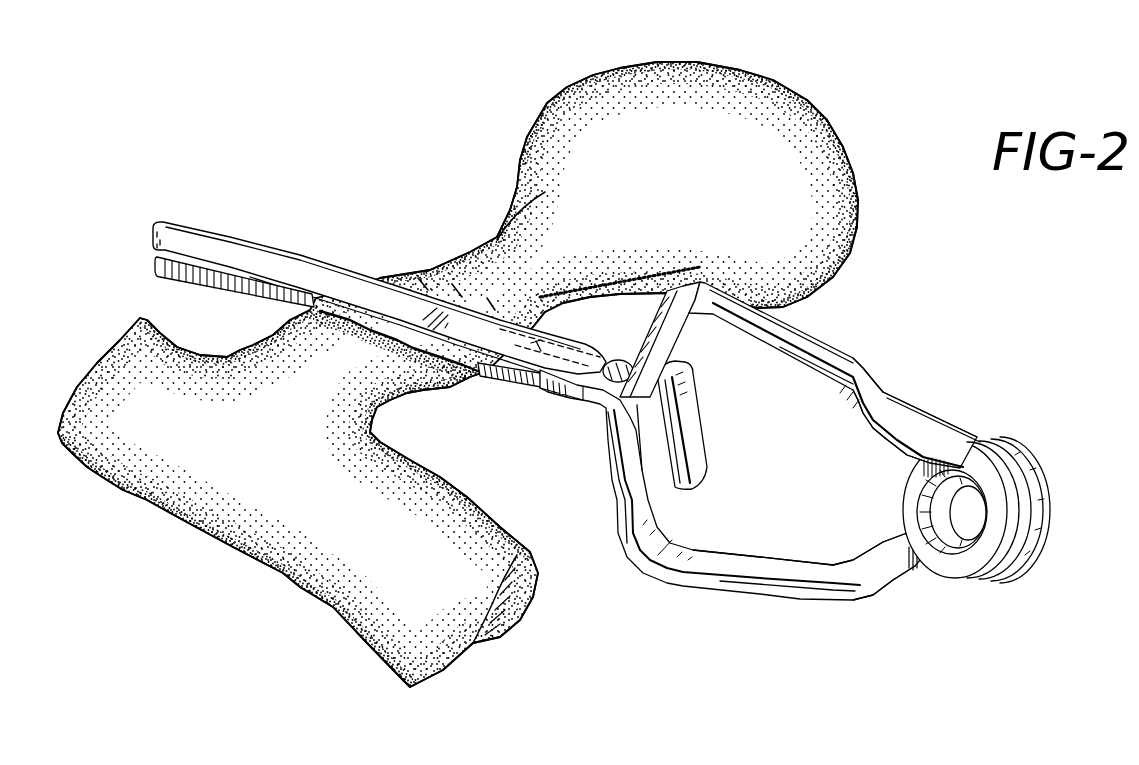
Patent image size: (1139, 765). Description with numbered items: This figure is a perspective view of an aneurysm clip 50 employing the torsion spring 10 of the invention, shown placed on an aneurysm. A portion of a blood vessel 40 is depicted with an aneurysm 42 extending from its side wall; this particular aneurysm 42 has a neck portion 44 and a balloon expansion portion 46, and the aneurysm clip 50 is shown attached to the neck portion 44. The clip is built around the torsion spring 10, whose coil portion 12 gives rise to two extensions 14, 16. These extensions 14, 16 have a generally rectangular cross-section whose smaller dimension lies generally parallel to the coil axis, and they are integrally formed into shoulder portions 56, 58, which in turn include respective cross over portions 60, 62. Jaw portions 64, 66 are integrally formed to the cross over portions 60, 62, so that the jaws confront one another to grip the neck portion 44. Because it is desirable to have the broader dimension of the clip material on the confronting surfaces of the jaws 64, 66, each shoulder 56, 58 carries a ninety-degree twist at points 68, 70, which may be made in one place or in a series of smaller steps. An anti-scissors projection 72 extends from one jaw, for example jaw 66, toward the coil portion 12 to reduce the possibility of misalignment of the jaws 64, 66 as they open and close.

The torsion spring 10 is at (904, 422).
The coil portion 12 is at (1033, 510).
The extension 14 is at (957, 423).
The extension 16 is at (914, 566).
The blood vessel 40 is at (300, 567).
The aneurysm 42 is at (458, 346).
The neck portion 44 is at (407, 388).
The balloon expansion portion 46 is at (694, 84).
The aneurysm clip 50 is at (824, 461).
The shoulder portion 56 is at (805, 330).
The shoulder portion 58 is at (720, 588).
The cross over portion 60 is at (692, 340).
The cross over portion 62 is at (733, 515).
The jaw portion 64 is at (250, 303).
The jaw portion 66 is at (379, 284).
The twist point 68 is at (865, 362).
The twist point 70 is at (863, 592).
The lever tab 72 is at (695, 450).